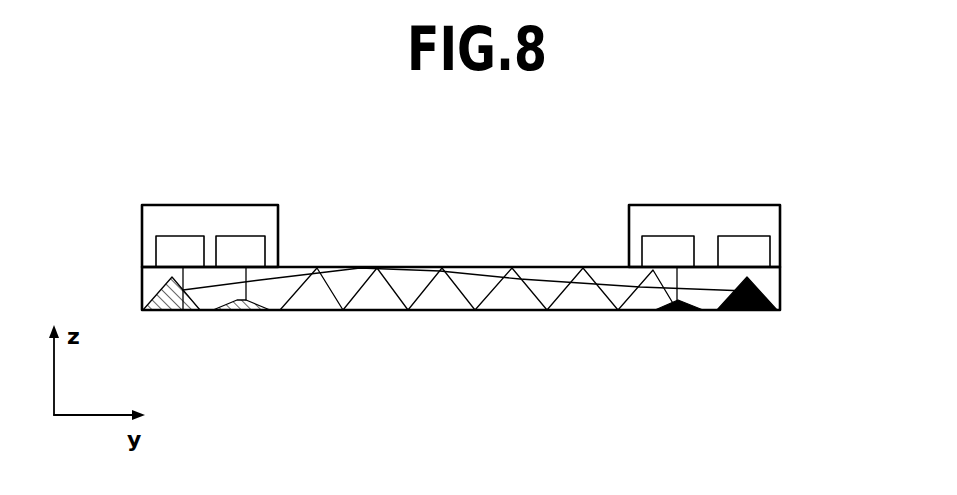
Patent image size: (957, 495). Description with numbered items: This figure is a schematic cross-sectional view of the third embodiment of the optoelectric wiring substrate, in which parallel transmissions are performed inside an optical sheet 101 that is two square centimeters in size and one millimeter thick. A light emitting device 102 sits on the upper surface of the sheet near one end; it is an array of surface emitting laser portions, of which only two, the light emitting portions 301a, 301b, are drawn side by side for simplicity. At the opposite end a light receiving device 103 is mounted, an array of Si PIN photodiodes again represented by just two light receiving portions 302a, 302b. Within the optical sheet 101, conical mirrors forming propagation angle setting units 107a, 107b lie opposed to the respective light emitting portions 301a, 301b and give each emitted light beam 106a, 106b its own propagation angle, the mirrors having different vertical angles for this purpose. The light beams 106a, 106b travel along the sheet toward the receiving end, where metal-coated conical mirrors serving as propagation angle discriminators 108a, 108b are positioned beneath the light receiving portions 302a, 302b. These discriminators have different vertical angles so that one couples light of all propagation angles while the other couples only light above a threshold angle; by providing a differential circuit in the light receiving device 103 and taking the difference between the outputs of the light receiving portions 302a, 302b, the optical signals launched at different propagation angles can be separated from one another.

The optical sheet 101 is at (781, 283).
The light emitting device 102 is at (280, 237).
The light receiving device 103 is at (628, 239).
The light emitting portion 301a is at (183, 249).
The light emitting portion 301b is at (243, 249).
The light receiving portion 302a is at (737, 249).
The light receiving portion 302b is at (677, 249).
The light beam 106a is at (610, 282).
The light beam 106b is at (528, 292).
The propagation angle setting unit 107a is at (170, 300).
The propagation angle setting unit 107b is at (240, 307).
The propagation angle discriminator 108a is at (757, 313).
The propagation angle discriminator 108b is at (682, 313).